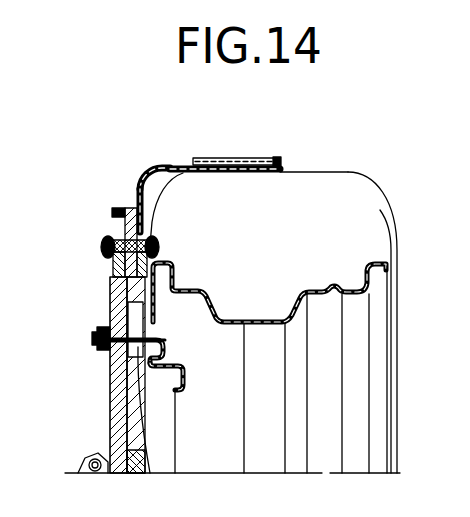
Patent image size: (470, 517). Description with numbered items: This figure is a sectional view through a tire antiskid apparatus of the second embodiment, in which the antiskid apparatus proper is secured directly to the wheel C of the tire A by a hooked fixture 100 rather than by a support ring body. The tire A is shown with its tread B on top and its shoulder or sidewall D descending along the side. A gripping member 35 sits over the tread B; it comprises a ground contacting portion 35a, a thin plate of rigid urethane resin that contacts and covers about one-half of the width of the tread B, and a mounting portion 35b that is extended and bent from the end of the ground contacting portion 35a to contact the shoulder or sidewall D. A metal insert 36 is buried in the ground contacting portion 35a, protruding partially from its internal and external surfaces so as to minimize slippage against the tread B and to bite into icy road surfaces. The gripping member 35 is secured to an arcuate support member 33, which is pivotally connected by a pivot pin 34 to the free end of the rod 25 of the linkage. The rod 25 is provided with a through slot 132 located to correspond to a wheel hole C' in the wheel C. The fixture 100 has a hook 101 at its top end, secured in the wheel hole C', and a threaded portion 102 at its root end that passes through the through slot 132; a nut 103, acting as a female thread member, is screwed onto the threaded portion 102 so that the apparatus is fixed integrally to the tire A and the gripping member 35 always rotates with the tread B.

The tire A is at (386, 188).
The tread B is at (349, 172).
The wheel C is at (186, 418).
The wheel hole C' is at (175, 410).
The shoulder or sidewall D is at (150, 218).
The rod 25 is at (110, 415).
The arcuate support member 33 is at (113, 224).
The pivot pin 34 is at (103, 247).
The gripping member 35 is at (163, 163).
The ground contacting portion 35a is at (283, 163).
The mounting portion 35b is at (135, 188).
The metal insert 36 is at (255, 157).
The fixture 100 is at (118, 378).
The hook 101 is at (165, 345).
The threaded portion 102 is at (97, 337).
The nut 103 is at (107, 328).
The through slot 132 is at (115, 356).